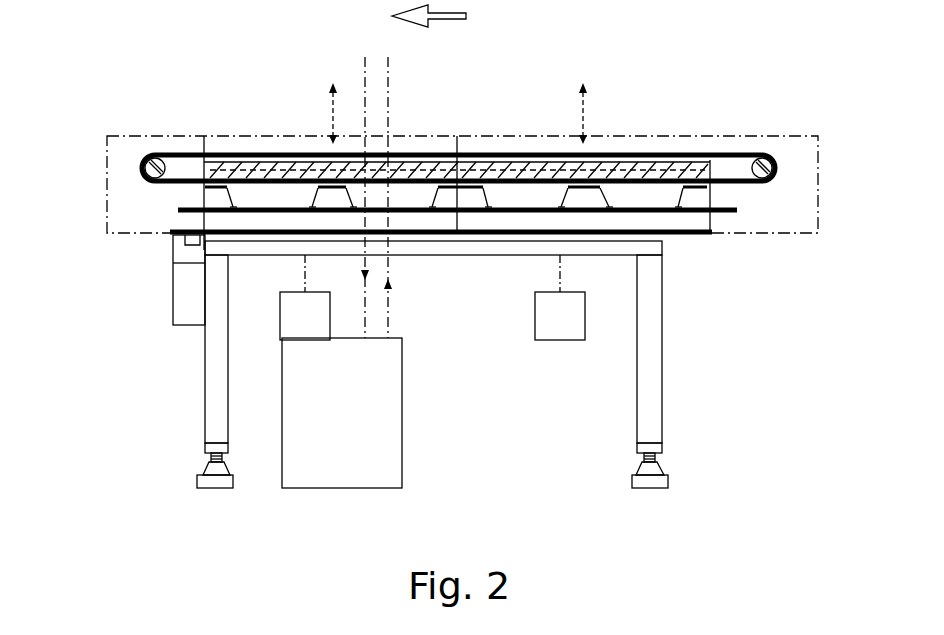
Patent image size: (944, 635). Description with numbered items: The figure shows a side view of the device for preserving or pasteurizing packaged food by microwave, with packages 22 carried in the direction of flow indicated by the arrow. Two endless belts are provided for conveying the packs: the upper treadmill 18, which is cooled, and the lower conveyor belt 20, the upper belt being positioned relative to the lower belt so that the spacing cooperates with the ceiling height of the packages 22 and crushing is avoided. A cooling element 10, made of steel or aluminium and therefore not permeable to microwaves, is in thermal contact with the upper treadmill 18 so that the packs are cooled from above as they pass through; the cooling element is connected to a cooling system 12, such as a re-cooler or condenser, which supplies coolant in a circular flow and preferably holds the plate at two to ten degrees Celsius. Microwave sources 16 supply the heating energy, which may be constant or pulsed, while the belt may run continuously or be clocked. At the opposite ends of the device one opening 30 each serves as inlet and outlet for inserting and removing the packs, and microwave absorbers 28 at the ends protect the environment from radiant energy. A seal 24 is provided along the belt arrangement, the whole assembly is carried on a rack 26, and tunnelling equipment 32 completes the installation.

The cooling element 10 is at (635, 152).
The cooling system 12 is at (342, 413).
The microwave sources 16 is at (429, 316).
The upper treadmill 18 is at (188, 148).
The lower conveyor belt 20 is at (470, 212).
The package with food 22 is at (690, 200).
The seal 24 is at (278, 160).
The rack 26 is at (647, 415).
The microwave absorber 28 is at (98, 150).
The opening 30 is at (172, 197).
The tunnelling equipment 32 is at (172, 292).